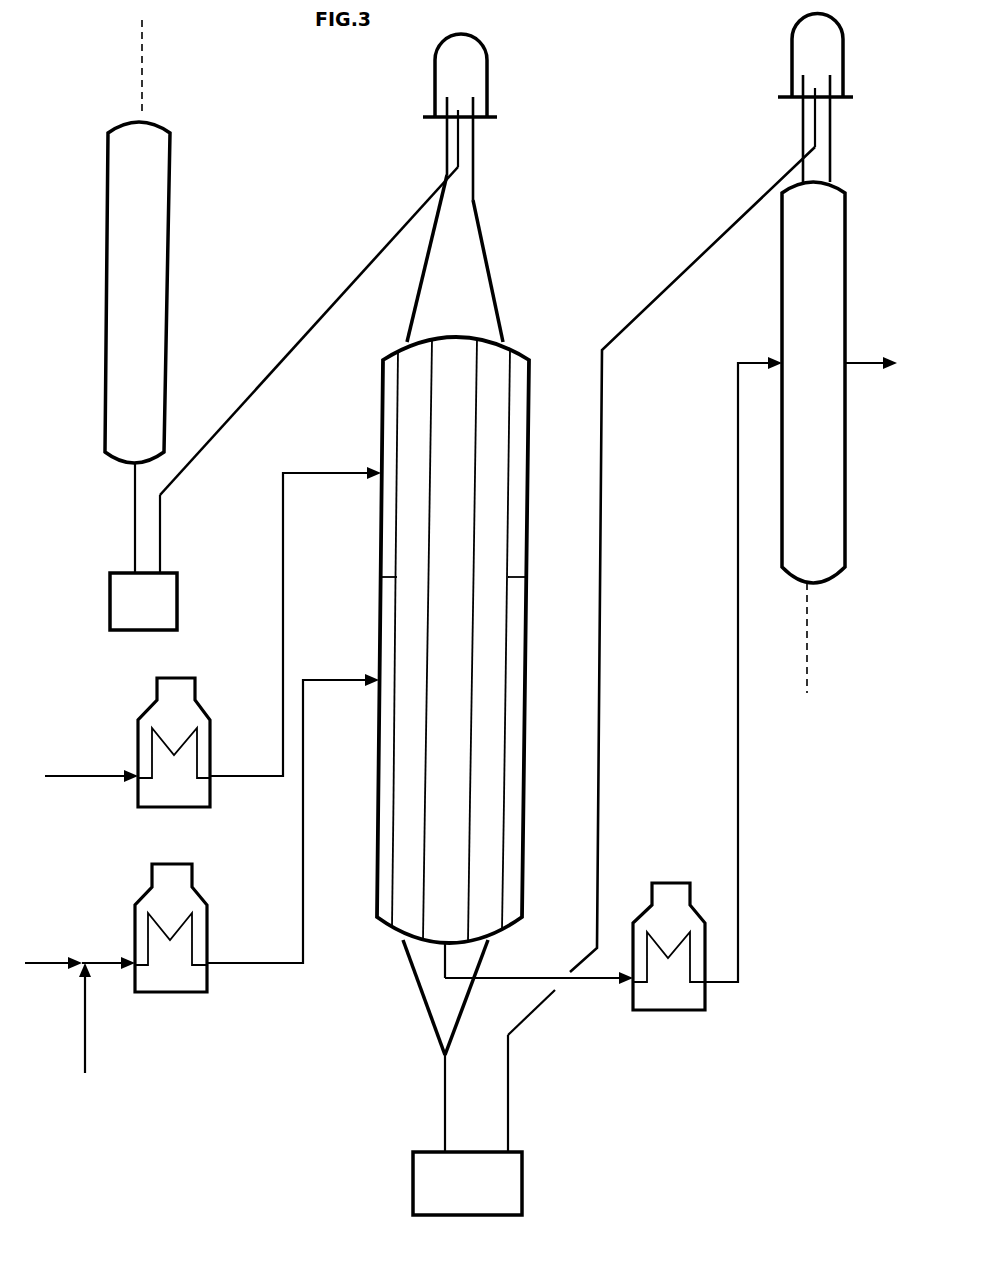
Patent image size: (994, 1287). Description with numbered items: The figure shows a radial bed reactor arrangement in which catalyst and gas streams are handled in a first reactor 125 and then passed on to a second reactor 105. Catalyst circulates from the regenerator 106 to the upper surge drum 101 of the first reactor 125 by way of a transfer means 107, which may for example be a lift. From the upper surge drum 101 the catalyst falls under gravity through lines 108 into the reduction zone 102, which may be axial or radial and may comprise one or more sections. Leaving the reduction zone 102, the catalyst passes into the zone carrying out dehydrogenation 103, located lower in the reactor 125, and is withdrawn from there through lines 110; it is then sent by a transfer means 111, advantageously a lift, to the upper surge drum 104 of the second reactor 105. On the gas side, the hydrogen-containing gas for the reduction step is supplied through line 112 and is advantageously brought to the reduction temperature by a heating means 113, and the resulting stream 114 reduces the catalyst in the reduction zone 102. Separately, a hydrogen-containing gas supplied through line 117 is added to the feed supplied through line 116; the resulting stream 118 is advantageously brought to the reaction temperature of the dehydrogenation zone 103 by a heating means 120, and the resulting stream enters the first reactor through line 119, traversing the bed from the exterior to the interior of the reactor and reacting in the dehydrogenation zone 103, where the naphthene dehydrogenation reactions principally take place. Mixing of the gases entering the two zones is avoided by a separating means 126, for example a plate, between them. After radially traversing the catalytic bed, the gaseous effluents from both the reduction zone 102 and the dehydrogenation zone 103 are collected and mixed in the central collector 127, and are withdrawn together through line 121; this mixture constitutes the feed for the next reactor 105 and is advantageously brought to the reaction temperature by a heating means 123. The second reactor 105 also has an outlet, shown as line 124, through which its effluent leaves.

The upper surge drum 101 is at (488, 70).
The reduction zone 102 is at (455, 408).
The dehydrogenation zone 103 is at (482, 760).
The upper surge drum of the second reactor 104 is at (797, 57).
The second reactor 105 is at (828, 374).
The regenerator 106 is at (151, 294).
The transfer means 107 is at (328, 308).
The lines 108 is at (486, 270).
The lines 110 is at (447, 1103).
The transfer means 111 is at (598, 657).
The line 112 is at (110, 770).
The heating means 113 is at (142, 720).
The stream 114 is at (323, 470).
The line 116 is at (68, 960).
The line 117 is at (87, 1007).
The stream 118 is at (113, 960).
The line 119 is at (337, 677).
The heating means 120 is at (160, 993).
The line 121 is at (570, 983).
The heating means 123 is at (703, 1012).
The outlet line 124 is at (855, 362).
The first reactor 125 is at (368, 897).
The separating means 126 is at (513, 578).
The central collector 127 is at (445, 835).